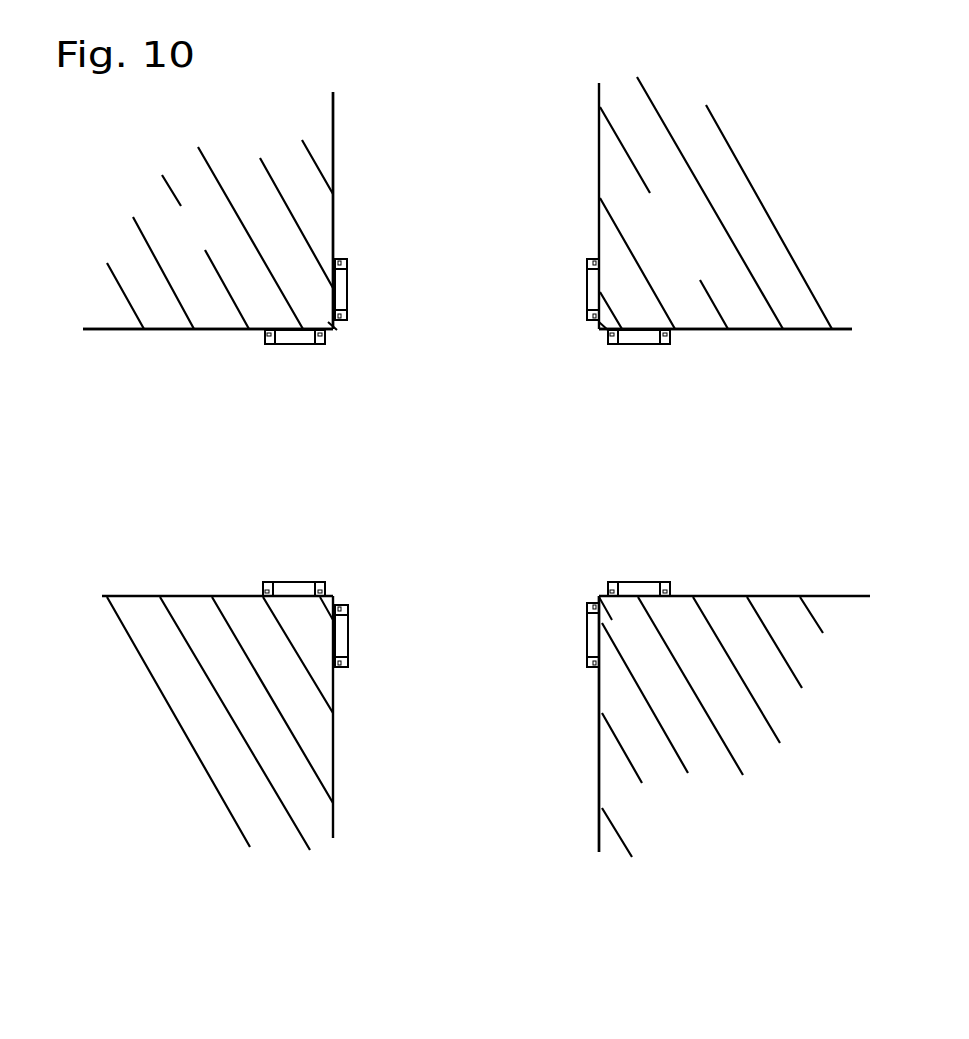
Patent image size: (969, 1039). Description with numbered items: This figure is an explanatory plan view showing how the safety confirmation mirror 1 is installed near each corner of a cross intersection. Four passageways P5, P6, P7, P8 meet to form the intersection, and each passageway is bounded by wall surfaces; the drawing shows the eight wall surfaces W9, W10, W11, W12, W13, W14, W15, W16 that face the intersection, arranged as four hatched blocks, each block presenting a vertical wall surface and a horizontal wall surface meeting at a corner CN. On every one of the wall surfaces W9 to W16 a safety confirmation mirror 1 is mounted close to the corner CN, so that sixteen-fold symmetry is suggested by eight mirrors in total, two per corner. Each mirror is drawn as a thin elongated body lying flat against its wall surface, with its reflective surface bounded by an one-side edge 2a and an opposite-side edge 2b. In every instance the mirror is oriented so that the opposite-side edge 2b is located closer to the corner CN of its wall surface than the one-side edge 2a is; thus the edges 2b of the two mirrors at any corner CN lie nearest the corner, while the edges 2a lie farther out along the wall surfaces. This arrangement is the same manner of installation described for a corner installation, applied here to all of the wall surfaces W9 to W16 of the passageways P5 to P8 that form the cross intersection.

The safety confirmation mirror 1 is at (377, 297).
The one-side edge 2a is at (347, 254).
The opposite-side edge 2b is at (350, 317).
The corner CN is at (338, 329).
The passageway P5 is at (582, 792).
The passageway P6 is at (362, 137).
The passageway P7 is at (213, 345).
The passageway P8 is at (698, 340).
The wall surface W9 is at (599, 753).
The wall surface W10 is at (337, 752).
The wall surface W11 is at (598, 173).
The wall surface W12 is at (333, 175).
The wall surface W13 is at (180, 332).
The wall surface W14 is at (177, 595).
The wall surface W15 is at (755, 330).
The wall surface W16 is at (757, 595).